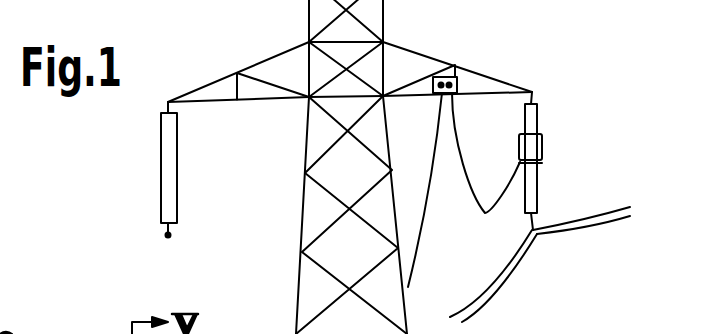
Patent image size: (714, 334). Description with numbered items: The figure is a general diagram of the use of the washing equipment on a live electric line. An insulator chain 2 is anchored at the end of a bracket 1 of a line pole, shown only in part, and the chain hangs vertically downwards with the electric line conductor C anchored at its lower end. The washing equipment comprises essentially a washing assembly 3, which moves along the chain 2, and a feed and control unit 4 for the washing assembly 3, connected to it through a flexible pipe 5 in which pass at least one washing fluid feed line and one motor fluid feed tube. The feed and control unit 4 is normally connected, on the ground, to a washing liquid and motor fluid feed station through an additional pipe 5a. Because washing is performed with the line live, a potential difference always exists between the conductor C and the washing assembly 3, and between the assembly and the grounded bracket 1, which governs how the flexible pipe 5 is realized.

The bracket 1 is at (490, 73).
The insulator chain 2 is at (533, 198).
The washing assembly 3 is at (542, 146).
The feed and control unit 4 is at (453, 77).
The flexible pipe 5 is at (485, 214).
The additional pipe 5a is at (417, 255).
The conductor C is at (510, 265).